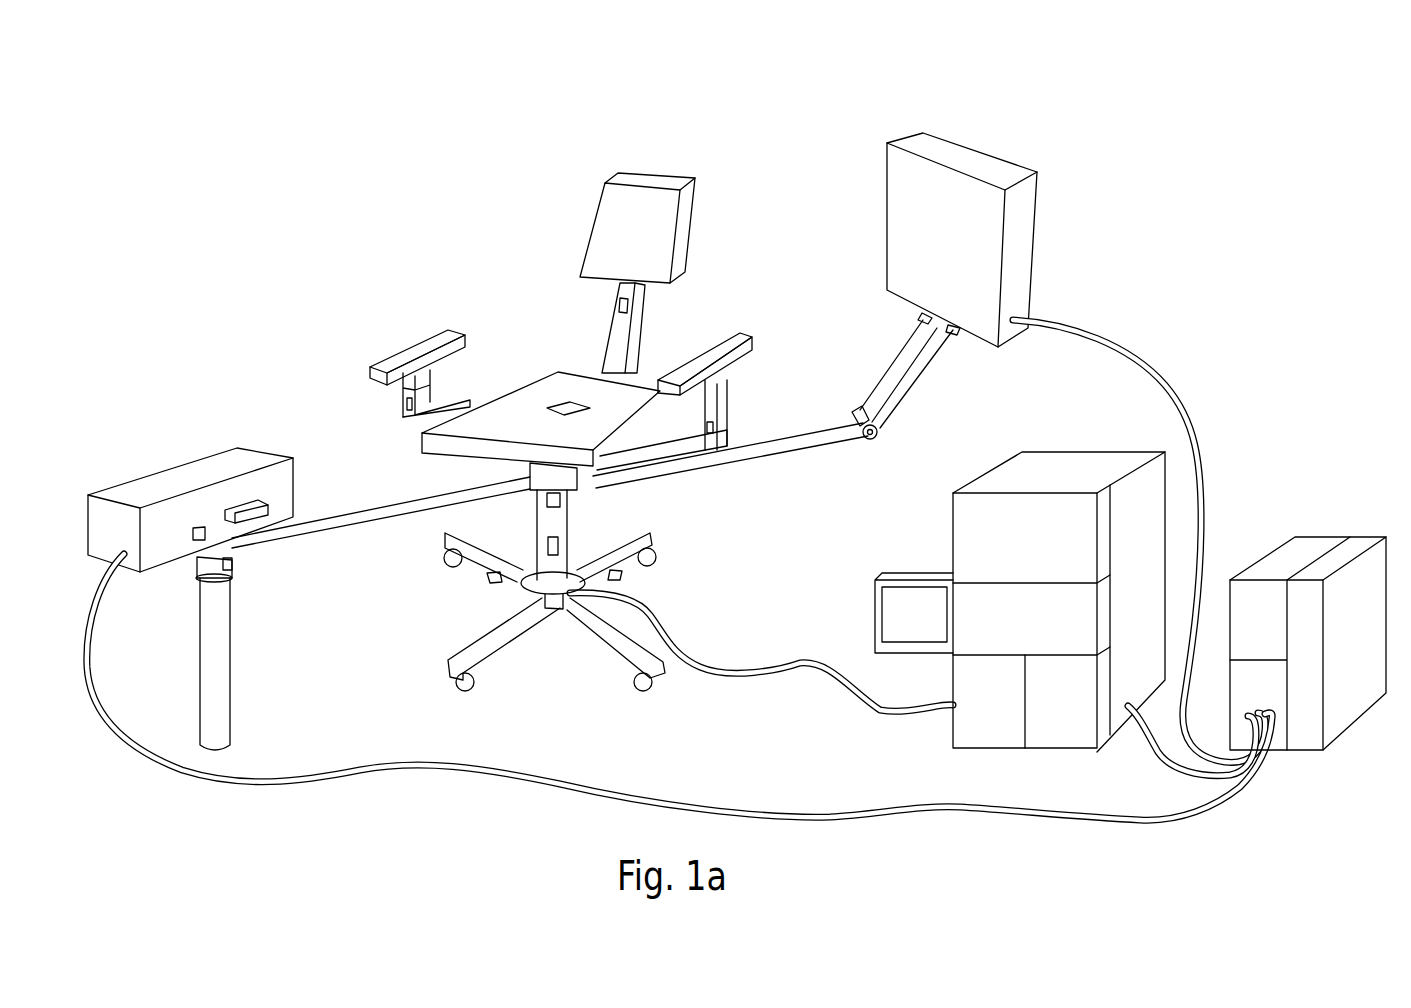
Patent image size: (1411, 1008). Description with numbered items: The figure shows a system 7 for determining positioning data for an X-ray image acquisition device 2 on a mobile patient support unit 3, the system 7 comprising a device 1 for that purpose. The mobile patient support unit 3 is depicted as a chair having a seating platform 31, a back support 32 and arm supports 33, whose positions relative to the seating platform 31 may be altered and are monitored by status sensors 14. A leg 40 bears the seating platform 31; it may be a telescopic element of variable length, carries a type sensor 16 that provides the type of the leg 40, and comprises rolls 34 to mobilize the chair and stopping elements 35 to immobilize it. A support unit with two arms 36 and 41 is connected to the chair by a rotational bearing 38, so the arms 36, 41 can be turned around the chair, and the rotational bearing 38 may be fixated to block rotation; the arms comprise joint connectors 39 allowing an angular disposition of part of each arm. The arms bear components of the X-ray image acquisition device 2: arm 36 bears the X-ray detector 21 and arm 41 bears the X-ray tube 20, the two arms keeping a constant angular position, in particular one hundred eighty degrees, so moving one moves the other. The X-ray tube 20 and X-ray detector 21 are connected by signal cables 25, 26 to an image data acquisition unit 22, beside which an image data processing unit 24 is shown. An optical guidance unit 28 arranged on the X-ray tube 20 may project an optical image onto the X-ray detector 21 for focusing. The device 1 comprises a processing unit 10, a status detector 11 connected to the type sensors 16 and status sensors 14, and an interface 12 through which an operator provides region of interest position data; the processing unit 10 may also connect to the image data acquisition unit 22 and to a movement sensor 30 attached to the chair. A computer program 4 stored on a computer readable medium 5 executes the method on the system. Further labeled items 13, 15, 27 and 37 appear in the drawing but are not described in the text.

The device 1 is at (882, 550).
The X-ray image acquisition device 2 is at (1115, 213).
The mobile patient support unit 3 is at (445, 215).
The computer program 4 is at (892, 620).
The computer readable medium 5 is at (875, 592).
The system 7 is at (878, 125).
The processing unit 10 is at (975, 640).
The status detector 11 is at (968, 732).
The interface 12 is at (970, 513).
The housing base 13 is at (1067, 730).
The status sensors 14 is at (620, 303).
The cable 15 is at (730, 680).
The type sensor 16 is at (205, 528).
The X-ray tube 20 is at (217, 467).
The X-ray detector 21 is at (900, 200).
The image data acquisition unit 22 is at (1283, 748).
The image data processing unit 24 is at (1302, 545).
The signal cable 25 is at (748, 805).
The signal cable 26 is at (1167, 372).
The cable 27 is at (1152, 760).
The optical guidance unit 28 is at (252, 507).
The movement sensor 30 is at (565, 398).
The seating platform 31 is at (655, 373).
The back support 32 is at (660, 175).
The arm supports 33 is at (390, 360).
The rolls 34 is at (457, 683).
The stopping elements 35 is at (630, 578).
The arm 36 is at (748, 437).
The stand rod 37 is at (218, 690).
The rotational bearing 38 is at (538, 497).
The joint connectors 39 is at (915, 318).
The leg 40 is at (520, 588).
The arm 41 is at (350, 535).